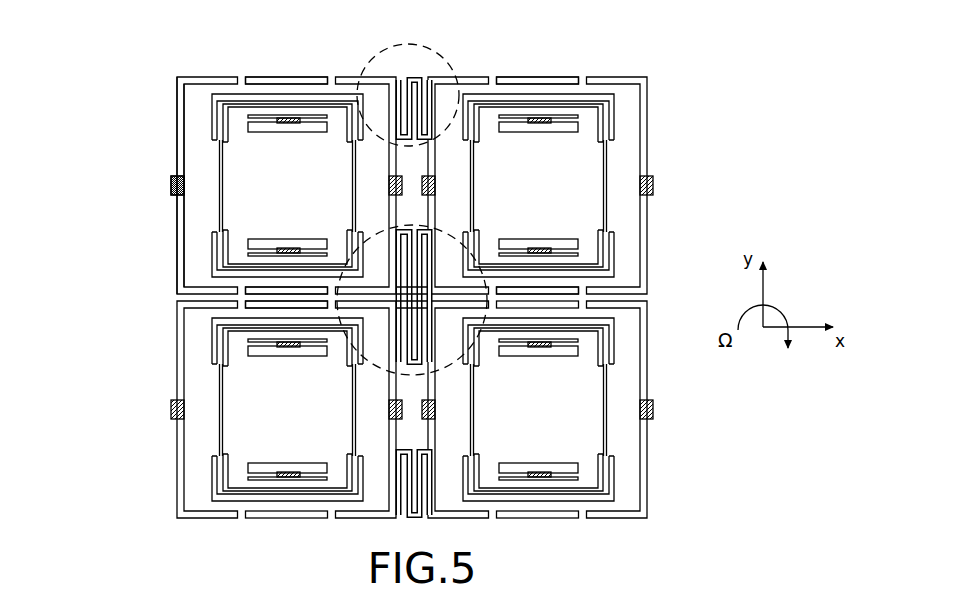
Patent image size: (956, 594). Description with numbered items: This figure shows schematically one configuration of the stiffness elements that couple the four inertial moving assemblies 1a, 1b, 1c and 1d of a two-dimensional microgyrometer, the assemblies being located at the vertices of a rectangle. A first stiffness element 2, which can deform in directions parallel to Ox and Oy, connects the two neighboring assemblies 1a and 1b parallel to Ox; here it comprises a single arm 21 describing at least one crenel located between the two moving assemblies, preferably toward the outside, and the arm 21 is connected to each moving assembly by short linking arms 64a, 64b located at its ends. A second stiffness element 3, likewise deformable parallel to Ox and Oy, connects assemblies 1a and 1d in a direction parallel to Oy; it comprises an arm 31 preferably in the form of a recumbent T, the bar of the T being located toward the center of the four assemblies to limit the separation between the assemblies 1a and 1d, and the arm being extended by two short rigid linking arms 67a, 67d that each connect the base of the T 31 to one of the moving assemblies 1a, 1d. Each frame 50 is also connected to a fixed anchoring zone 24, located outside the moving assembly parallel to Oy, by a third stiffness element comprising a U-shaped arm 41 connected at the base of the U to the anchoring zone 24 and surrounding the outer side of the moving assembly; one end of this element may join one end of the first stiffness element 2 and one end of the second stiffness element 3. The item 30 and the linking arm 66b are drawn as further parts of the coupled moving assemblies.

The moving assembly 1a is at (112, 160).
The moving assembly 1b is at (697, 160).
The moving assembly 1c is at (680, 415).
The moving assembly 1d is at (135, 415).
The first stiffness element 2 is at (432, 48).
The second stiffness element 3 is at (412, 232).
The arm 21 is at (420, 90).
The arm 31 is at (398, 370).
The anchoring zone 24 is at (171, 192).
The vibrating mass 30 is at (247, 168).
The U-shaped arm 41 is at (180, 251).
The frame 50 is at (262, 185).
The short linking arm 64a is at (342, 87).
The short linking arm 64b is at (578, 84).
The frame segment 66b is at (500, 292).
The short rigid linking arm 67a is at (243, 289).
The short rigid linking arm 67d is at (330, 304).